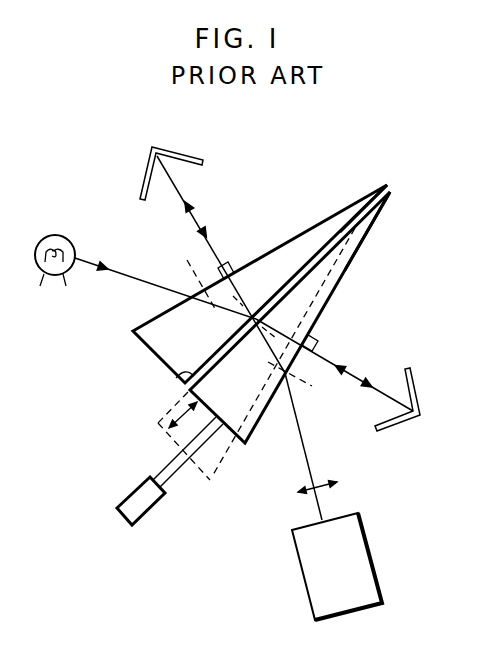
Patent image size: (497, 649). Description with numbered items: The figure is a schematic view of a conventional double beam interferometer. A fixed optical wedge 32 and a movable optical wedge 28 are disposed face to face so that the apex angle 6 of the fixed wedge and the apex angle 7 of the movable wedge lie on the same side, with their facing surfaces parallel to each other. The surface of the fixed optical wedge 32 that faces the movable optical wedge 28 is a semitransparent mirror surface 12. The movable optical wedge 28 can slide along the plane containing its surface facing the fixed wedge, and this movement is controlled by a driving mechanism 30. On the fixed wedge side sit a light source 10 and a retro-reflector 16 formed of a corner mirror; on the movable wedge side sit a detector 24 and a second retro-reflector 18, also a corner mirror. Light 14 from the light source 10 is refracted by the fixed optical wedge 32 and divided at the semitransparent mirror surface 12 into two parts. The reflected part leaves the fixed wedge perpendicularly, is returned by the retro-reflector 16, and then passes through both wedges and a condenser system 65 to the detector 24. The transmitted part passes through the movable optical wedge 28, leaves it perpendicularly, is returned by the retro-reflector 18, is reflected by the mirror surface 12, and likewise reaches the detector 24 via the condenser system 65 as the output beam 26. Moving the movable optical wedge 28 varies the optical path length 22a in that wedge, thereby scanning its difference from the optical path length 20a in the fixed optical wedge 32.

The light source 10 is at (52, 236).
The light 14 is at (138, 274).
The retro-reflector 16 is at (192, 162).
The retro-reflector 18 is at (422, 392).
The optical path length 20a is at (240, 285).
The optical path length 22a is at (283, 333).
The apex angle 6 is at (385, 186).
The apex angle 7 is at (386, 205).
The movable optical wedge 28 is at (348, 243).
The fixed optical wedge 32 is at (162, 342).
The semitransparent mirror surface 12 is at (177, 377).
The output light beam 26 is at (307, 457).
The condenser system 65 is at (303, 494).
The detector 24 is at (368, 533).
The driving mechanism 30 is at (133, 497).